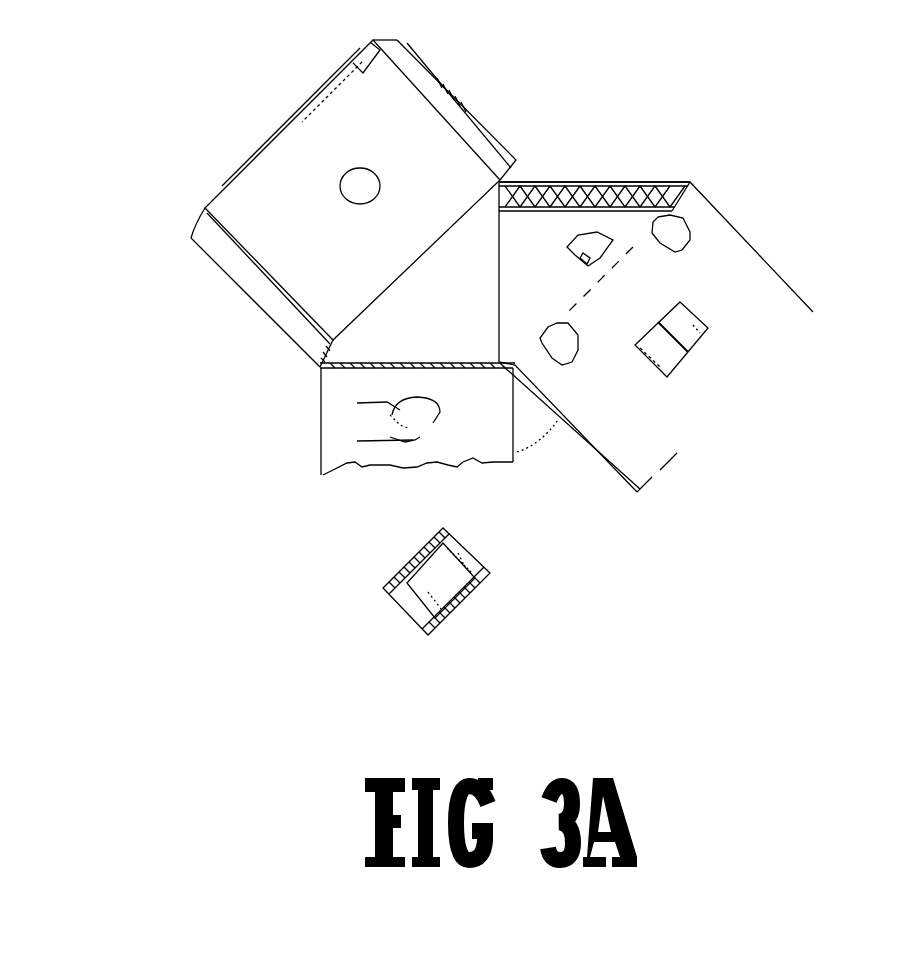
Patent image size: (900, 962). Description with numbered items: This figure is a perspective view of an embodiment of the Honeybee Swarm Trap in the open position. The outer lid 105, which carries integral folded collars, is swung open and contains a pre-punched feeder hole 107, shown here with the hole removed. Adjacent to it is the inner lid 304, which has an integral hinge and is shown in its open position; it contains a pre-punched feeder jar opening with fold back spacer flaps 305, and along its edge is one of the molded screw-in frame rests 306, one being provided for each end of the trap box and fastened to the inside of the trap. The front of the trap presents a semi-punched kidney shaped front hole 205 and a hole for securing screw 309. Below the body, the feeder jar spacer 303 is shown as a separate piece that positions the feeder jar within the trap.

The outer lid 105 is at (252, 301).
The pre-punched feeder hole 107 is at (368, 170).
The semi-punched kidney shaped front hole 205 is at (357, 403).
The feeder jar spacer 303 is at (400, 572).
The inner lid 304 is at (798, 292).
The pre-punched feeder jar opening with fold back spacer flaps 305 is at (690, 300).
The frame rest 306 is at (572, 182).
The hole for securing screw 309 is at (357, 441).